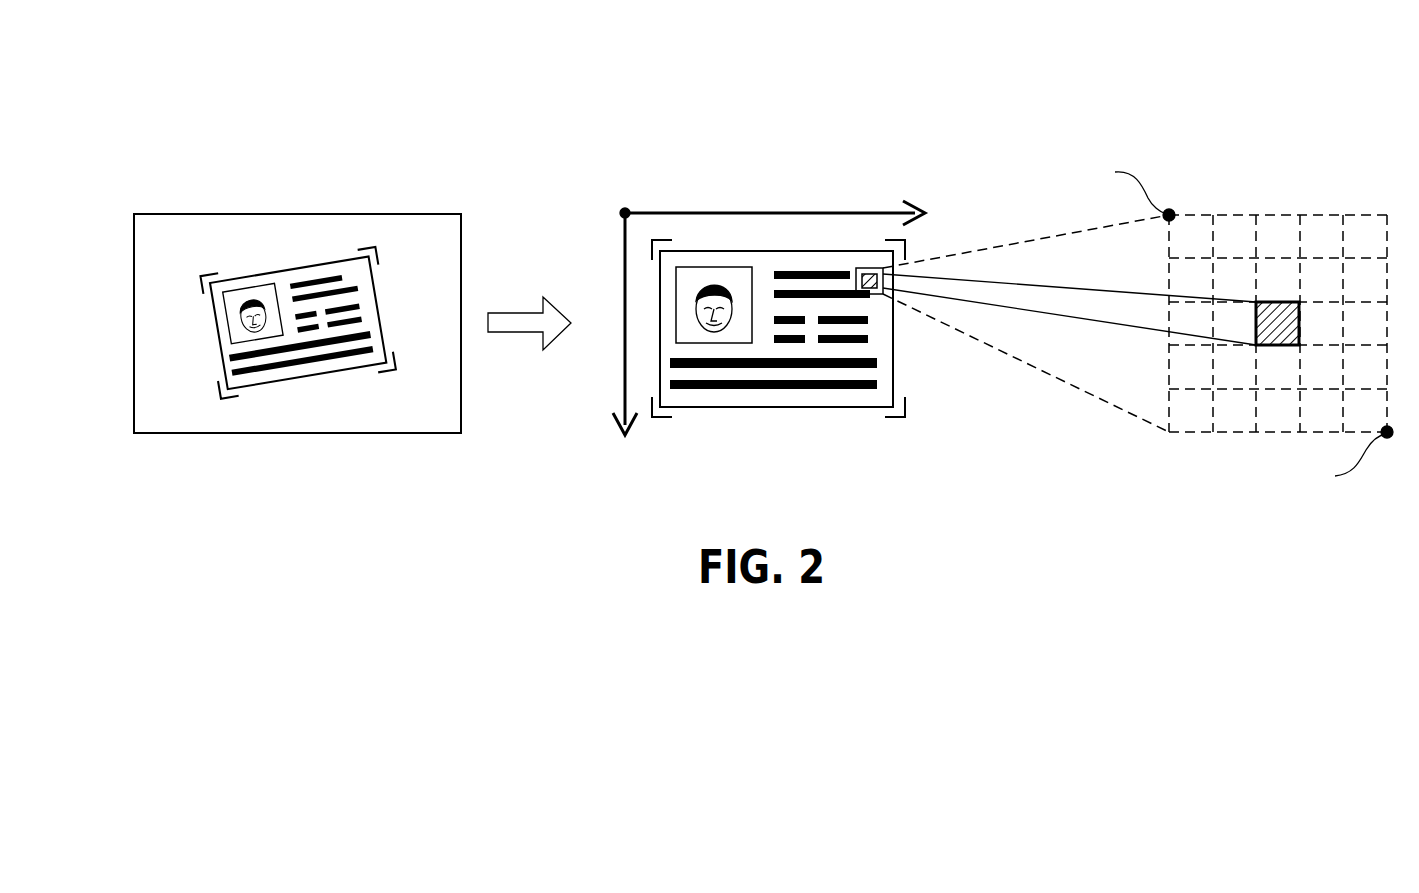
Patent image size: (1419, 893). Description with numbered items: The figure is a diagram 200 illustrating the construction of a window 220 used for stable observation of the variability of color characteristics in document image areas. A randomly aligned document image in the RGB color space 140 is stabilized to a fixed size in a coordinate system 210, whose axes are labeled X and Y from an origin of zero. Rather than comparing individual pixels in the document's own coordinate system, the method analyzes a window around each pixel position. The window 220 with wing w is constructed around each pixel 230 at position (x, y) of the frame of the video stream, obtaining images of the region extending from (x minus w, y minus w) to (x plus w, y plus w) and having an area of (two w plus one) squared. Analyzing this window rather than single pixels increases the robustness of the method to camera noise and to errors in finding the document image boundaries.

The image processing pipeline 200 is at (185, 60).
The RGB color space 140 is at (401, 214).
The coordinate system 210 is at (660, 192).
The window 220 is at (1368, 178).
The pixel 230 is at (1266, 302).